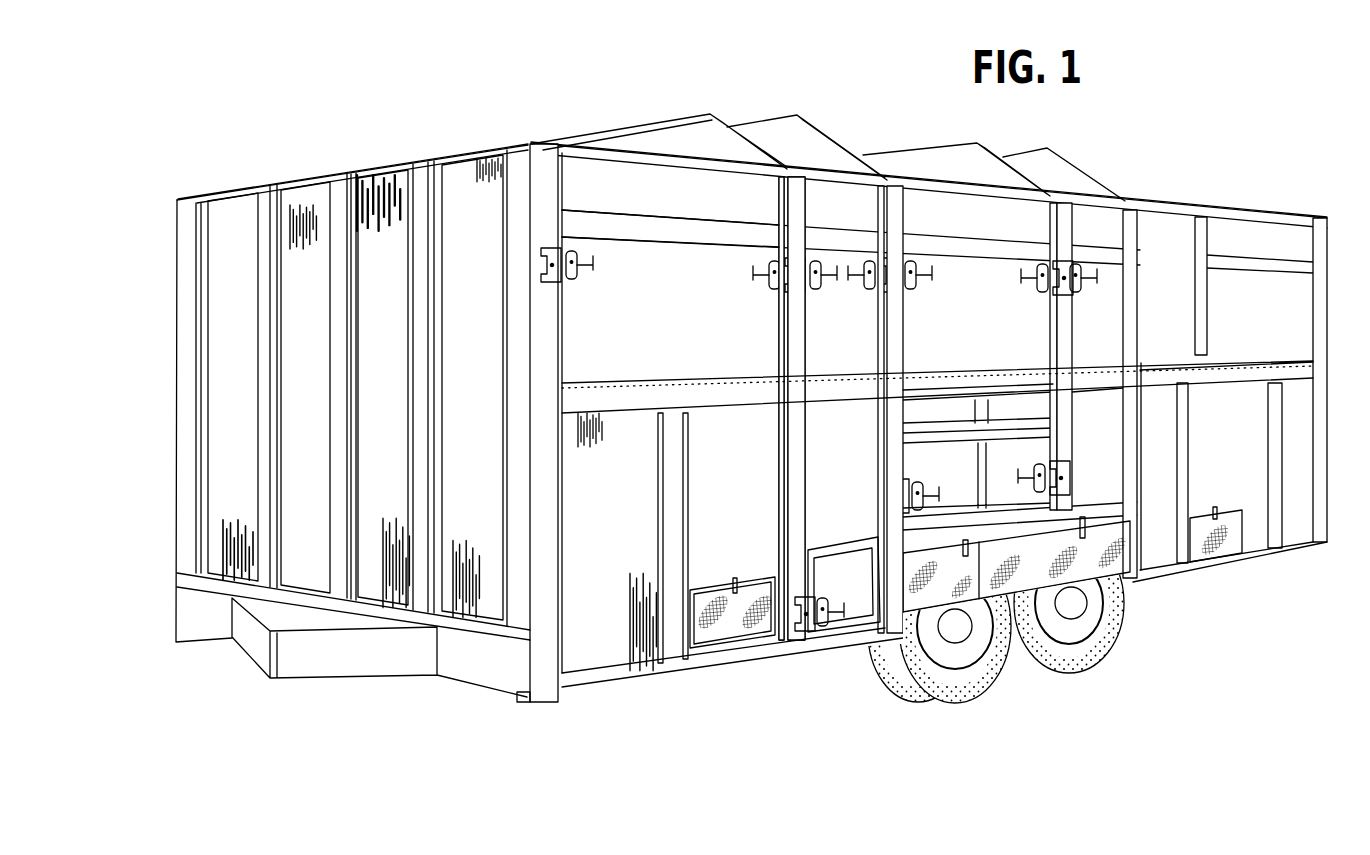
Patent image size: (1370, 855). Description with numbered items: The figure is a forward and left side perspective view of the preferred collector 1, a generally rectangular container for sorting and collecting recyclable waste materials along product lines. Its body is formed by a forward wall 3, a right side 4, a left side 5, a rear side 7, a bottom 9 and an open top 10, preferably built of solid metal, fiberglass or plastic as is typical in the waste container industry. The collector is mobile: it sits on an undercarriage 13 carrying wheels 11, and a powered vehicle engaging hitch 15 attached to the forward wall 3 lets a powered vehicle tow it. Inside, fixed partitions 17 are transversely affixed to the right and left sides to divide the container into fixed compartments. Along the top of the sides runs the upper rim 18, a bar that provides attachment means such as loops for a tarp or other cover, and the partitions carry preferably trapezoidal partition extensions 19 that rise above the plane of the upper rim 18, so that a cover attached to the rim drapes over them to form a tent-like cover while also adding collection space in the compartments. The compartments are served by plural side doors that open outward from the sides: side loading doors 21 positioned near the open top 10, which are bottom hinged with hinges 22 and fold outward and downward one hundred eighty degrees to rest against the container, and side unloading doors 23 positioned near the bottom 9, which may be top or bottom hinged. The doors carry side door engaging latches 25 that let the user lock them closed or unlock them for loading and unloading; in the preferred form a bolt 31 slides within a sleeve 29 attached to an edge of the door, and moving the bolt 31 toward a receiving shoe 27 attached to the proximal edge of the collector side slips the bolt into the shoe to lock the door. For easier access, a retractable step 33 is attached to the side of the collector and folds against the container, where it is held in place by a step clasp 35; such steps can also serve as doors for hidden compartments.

The collector 1 is at (508, 116).
The forward wall 3 is at (388, 397).
The right side 4 is at (175, 431).
The left side 5 is at (1167, 282).
The rear side 7 is at (1318, 388).
The bottom 9 is at (1148, 577).
The open top 10 is at (368, 163).
The wheels 11 is at (1062, 655).
The undercarriage 13 is at (821, 651).
The powered vehicle engaging hitch 15 is at (270, 682).
The fixed partitions 17 is at (880, 207).
The upper rim 18 is at (1292, 217).
The partition extensions 19 is at (712, 137).
The side loading doors 21 is at (702, 321).
The hinges 22 is at (868, 390).
The side unloading doors 23 is at (862, 590).
The side door engaging latches 25 is at (808, 632).
The receiving shoe 27 is at (540, 250).
The sleeve 29 is at (568, 251).
The bolt 31 is at (595, 265).
The step 33 is at (725, 628).
The step clasp 35 is at (750, 553).